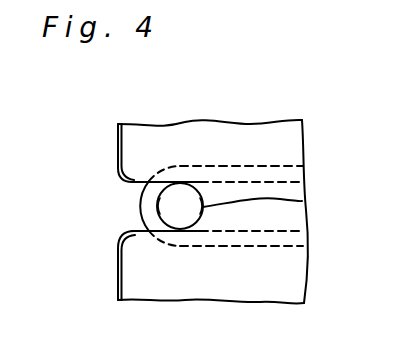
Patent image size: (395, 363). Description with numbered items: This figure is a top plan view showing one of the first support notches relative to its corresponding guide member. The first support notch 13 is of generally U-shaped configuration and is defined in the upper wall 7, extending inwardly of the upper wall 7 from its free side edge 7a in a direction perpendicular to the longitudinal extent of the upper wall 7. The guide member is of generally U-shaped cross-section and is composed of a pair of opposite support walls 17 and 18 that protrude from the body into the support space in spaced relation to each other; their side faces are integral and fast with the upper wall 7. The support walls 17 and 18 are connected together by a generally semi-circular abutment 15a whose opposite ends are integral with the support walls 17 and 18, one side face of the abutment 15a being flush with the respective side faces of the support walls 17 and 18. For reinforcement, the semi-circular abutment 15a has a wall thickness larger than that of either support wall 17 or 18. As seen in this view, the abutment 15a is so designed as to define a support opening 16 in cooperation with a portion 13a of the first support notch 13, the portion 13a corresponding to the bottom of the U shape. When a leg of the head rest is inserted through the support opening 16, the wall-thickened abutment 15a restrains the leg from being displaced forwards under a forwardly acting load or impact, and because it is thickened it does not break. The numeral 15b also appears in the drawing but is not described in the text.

The upper wall 7 is at (138, 141).
The free side edge 7a is at (118, 152).
The first support notch 13 is at (145, 184).
The portion of the first support notch 13a is at (302, 201).
The semi-circular abutment 15a is at (159, 208).
The lower plate flange 15b is at (149, 234).
The support opening 16 is at (191, 218).
The support wall 17 is at (264, 166).
The support wall 18 is at (257, 247).